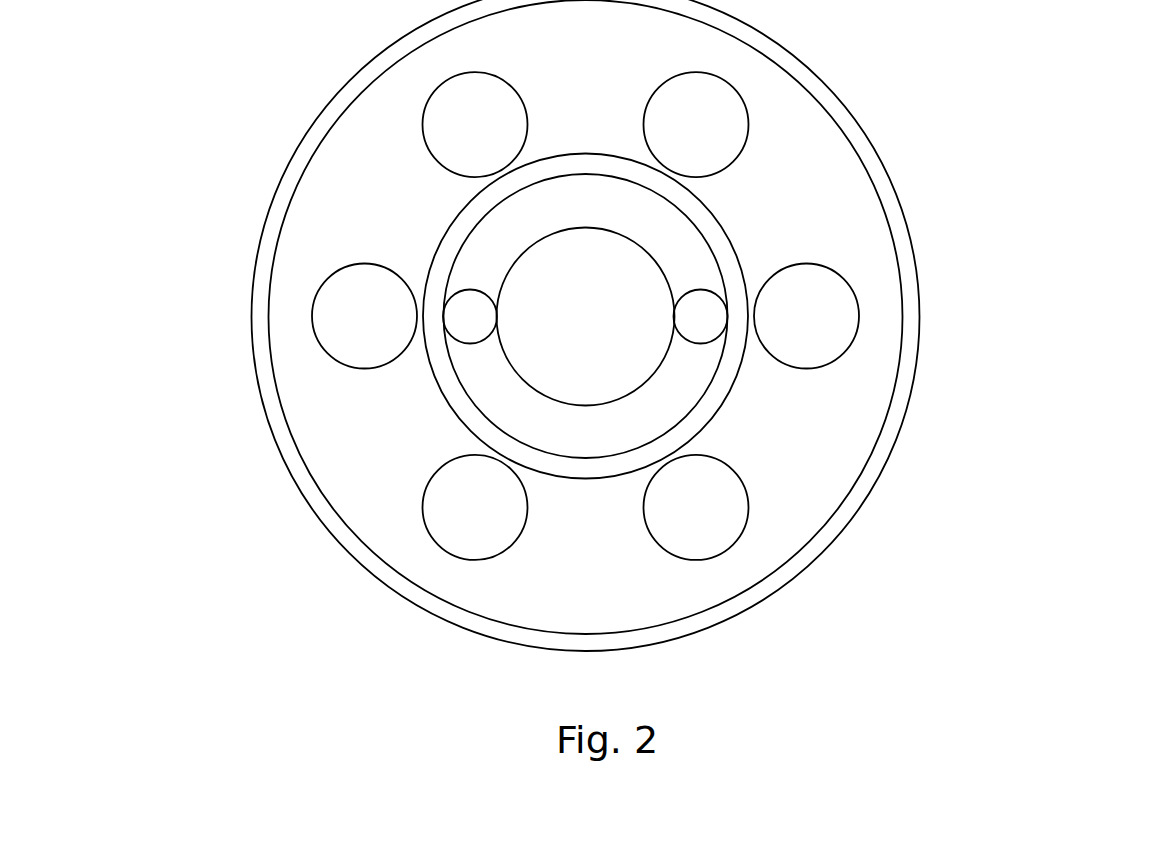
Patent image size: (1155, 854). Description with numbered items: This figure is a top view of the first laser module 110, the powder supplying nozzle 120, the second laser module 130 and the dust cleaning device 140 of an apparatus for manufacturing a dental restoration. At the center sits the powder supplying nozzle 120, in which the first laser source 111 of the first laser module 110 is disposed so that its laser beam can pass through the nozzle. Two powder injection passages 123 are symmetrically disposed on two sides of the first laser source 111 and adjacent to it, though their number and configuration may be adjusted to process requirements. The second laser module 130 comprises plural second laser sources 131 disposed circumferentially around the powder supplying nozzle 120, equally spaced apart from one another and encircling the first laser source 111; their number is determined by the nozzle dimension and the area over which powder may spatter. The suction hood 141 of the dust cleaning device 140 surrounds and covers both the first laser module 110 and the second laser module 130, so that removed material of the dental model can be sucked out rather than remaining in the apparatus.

The first laser module 110 is at (620, 325).
The first laser source 111 is at (635, 361).
The powder supplying nozzle 120 is at (715, 321).
The powder injection passage 123 is at (707, 327).
The second laser module 130 is at (634, 350).
The second laser source 131 is at (498, 139).
The dust cleaning device 140 is at (504, 325).
The suction hood 141 is at (367, 557).